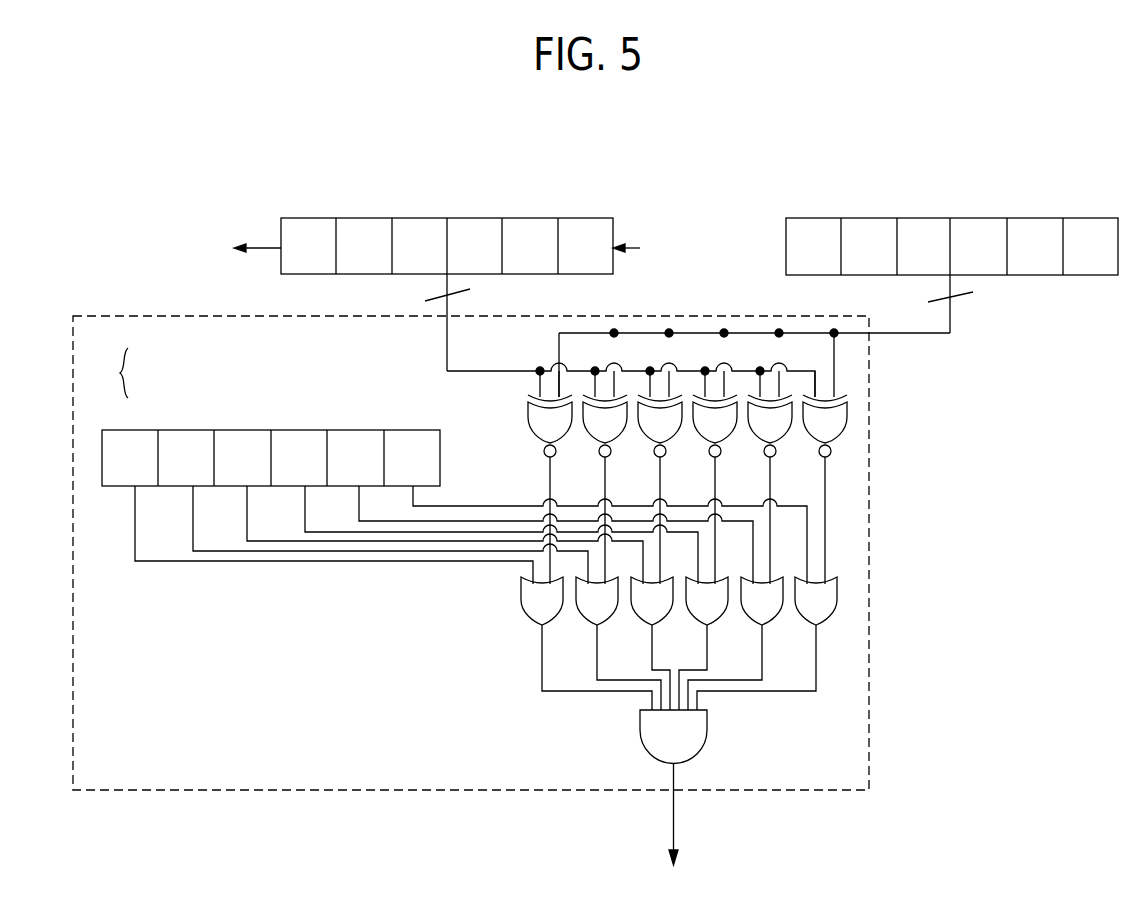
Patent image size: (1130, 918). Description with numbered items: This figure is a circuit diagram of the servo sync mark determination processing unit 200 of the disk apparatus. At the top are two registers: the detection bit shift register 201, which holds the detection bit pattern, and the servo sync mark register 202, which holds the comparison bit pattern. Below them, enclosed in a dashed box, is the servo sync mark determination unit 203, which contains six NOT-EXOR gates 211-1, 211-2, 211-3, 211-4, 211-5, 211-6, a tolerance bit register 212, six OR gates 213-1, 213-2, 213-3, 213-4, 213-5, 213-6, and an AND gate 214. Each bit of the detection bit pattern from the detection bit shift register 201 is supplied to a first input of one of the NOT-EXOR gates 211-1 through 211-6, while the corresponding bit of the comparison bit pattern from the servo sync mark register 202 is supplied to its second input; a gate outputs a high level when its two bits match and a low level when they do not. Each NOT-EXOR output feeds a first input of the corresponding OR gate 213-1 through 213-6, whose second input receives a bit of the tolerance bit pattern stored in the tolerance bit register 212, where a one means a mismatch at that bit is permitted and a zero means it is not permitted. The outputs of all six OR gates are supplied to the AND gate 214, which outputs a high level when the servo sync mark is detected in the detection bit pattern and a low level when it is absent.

The servo sync mark determination processing unit 200 is at (224, 143).
The detection bit shift register 201 is at (407, 218).
The servo sync mark register 202 is at (913, 218).
The servo sync mark determination unit 203 is at (869, 512).
The NOT-EXOR gate 211-1 is at (535, 438).
The NOT-EXOR gate 211-2 is at (590, 438).
The NOT-EXOR gate 211-3 is at (645, 438).
The NOT-EXOR gate 211-4 is at (700, 438).
The NOT-EXOR gate 211-5 is at (755, 438).
The NOT-EXOR gate 211-6 is at (810, 438).
The tolerance bit register 212 is at (115, 486).
The OR gate 213-1 is at (530, 625).
The OR gate 213-2 is at (585, 625).
The OR gate 213-3 is at (640, 625).
The OR gate 213-4 is at (695, 625).
The OR gate 213-5 is at (750, 625).
The OR gate 213-6 is at (805, 625).
The AND gate 214 is at (707, 728).